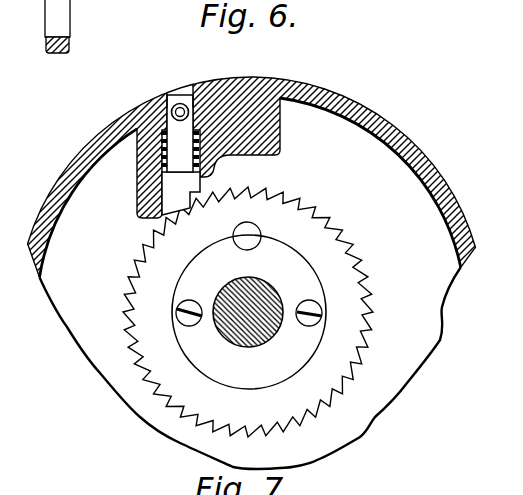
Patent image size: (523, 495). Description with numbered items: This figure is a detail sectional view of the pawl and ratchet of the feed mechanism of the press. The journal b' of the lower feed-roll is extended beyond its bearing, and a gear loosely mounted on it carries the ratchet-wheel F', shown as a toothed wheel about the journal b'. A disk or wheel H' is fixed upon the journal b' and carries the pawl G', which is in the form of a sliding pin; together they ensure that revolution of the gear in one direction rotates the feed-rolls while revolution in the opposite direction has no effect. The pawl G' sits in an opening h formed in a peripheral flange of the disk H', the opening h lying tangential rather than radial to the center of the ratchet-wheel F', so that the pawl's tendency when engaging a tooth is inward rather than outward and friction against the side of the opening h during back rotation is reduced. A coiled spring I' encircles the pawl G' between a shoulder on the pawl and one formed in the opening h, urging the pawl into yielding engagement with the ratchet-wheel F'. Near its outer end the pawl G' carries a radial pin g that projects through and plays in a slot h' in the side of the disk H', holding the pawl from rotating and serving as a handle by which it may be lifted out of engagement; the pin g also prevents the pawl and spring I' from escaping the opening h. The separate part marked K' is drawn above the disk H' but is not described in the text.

The key K' is at (70, 26).
The ratchet-wheel F' is at (248, 312).
The journal b' is at (250, 302).
The disk H' is at (257, 273).
The coiled spring I' is at (180, 149).
The pawl G' is at (181, 155).
The radial pin g is at (180, 121).
The slot h' is at (158, 91).
The opening h is at (182, 86).